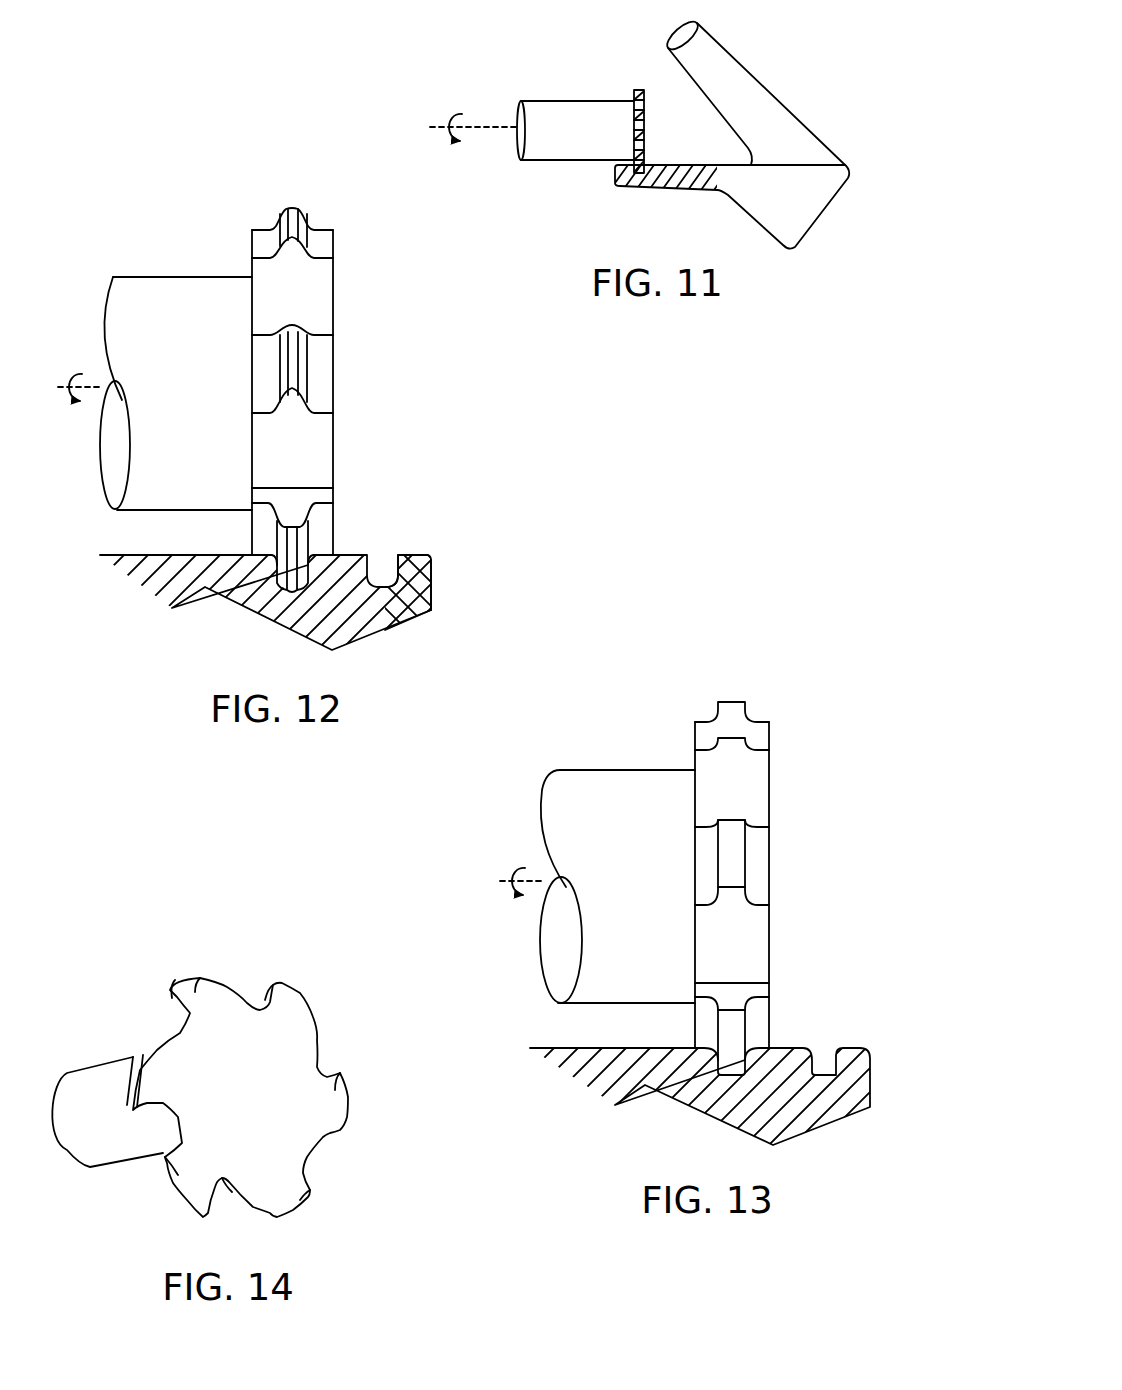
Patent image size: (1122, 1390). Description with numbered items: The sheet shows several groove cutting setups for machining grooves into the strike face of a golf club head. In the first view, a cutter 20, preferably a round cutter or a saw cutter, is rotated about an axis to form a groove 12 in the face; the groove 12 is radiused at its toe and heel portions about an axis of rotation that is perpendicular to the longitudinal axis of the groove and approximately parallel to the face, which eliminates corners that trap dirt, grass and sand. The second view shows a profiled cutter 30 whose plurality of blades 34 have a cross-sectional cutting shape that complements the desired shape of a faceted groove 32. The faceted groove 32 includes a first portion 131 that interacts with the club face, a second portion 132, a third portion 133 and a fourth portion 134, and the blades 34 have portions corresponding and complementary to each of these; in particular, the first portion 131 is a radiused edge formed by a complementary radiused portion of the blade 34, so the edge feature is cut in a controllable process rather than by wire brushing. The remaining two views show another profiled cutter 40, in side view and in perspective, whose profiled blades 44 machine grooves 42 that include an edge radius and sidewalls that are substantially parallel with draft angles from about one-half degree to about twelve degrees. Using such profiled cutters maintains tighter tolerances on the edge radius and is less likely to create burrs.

In FIG. 11, the groove 12 is at (688, 165).
In FIG. 11, the cutter 20 is at (590, 84).
In FIG. 12, the profiled cutter 30 is at (168, 287).
In FIG. 12, the faceted groove 32 is at (386, 554).
In FIG. 12, the blade 34 is at (339, 251).
In FIG. 13, the profiled cutter 40 is at (617, 781).
In FIG. 14, the profiled cutter 40 is at (301, 992).
In FIG. 13, the groove 42 is at (827, 1047).
In FIG. 13, the profiled blade 44 is at (774, 739).
In FIG. 14, the profiled blade 44 is at (340, 1102).
In FIG. 12, the first portion 131 is at (400, 559).
In FIG. 12, the second portion 132 is at (428, 586).
In FIG. 12, the third portion 133 is at (432, 610).
In FIG. 12, the fourth portion 134 is at (385, 590).